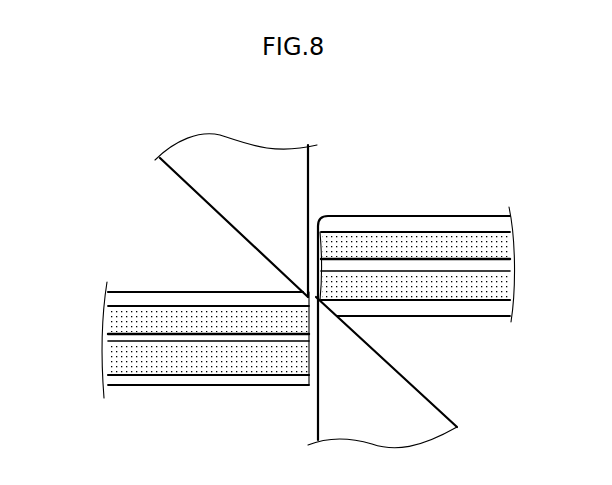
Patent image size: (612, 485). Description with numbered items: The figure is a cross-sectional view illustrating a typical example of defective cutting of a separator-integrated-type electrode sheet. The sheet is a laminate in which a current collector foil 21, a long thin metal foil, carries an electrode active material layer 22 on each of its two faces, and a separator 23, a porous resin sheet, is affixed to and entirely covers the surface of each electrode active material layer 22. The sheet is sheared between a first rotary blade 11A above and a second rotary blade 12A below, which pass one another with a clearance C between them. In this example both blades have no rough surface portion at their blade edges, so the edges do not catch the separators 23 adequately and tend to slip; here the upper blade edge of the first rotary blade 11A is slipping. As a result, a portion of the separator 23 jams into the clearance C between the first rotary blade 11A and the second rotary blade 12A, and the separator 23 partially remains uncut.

The first rotary blade 11A is at (186, 206).
The second rotary blade 12A is at (459, 388).
The current collector foil 21 is at (106, 340).
The electrode active material layer 22 is at (108, 318).
The separator 23 is at (108, 295).
The clearance C is at (321, 199).